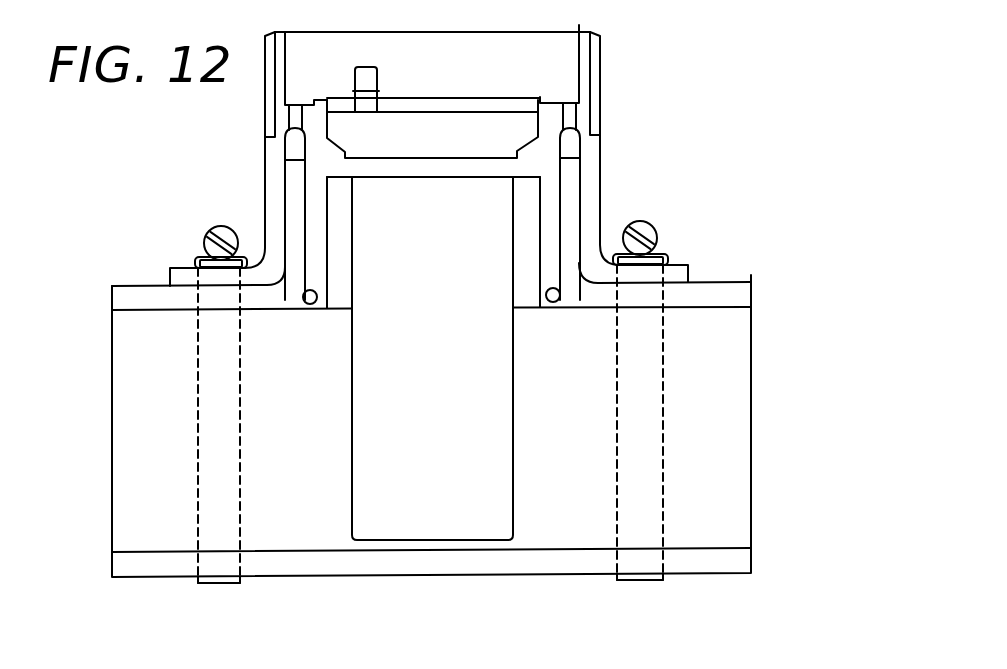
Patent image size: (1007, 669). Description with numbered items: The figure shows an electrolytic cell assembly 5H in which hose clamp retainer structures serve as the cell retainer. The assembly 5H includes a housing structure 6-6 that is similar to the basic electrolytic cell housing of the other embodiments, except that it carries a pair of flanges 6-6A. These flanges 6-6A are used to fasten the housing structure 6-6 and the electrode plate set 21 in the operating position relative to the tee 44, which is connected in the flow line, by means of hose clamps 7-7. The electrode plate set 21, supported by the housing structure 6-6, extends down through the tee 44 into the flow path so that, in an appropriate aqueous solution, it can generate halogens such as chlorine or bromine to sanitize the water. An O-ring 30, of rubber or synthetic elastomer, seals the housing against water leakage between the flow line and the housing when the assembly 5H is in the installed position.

The electrolytic cell assembly 5H is at (715, 101).
The housing structure 6-6 is at (588, 87).
The flanges 6-6A is at (172, 278).
The O-ring 30 is at (310, 305).
The electrode plate set 21 is at (346, 426).
The tee 44 is at (543, 563).
The hose clamps 7-7 is at (210, 583).